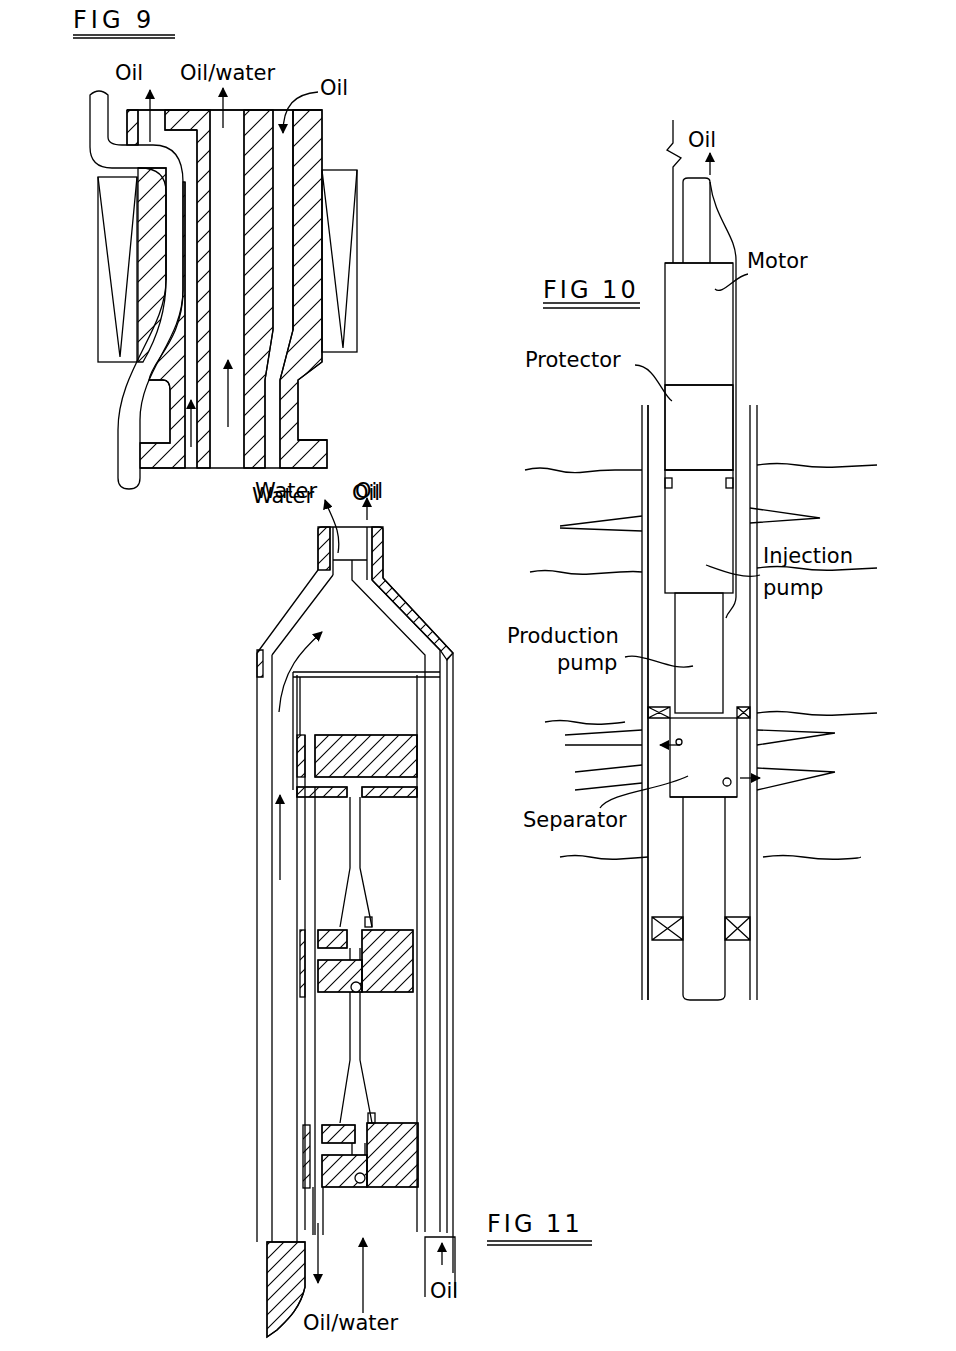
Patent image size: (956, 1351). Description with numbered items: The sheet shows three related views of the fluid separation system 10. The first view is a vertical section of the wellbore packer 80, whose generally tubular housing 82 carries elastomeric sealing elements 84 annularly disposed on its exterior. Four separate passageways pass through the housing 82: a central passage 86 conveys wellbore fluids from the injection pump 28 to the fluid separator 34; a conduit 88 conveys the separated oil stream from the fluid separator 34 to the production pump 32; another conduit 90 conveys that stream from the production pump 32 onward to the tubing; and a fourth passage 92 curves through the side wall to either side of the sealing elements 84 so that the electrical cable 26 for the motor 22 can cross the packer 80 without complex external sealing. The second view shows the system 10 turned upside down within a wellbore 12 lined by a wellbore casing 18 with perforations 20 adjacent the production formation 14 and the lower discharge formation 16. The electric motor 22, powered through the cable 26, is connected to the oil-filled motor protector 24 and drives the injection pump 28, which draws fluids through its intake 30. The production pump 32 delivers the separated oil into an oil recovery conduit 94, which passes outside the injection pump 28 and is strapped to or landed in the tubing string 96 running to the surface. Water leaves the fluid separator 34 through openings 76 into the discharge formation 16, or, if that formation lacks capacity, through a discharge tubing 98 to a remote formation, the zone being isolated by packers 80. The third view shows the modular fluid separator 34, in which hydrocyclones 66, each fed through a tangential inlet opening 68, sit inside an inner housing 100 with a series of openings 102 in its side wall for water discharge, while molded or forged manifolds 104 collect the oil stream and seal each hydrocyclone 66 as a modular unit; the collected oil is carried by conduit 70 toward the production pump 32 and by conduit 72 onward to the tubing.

In FIG. 10, the fluid separation system 10 is at (805, 396).
In FIG. 10, the wellbore 12 is at (652, 430).
In FIG. 10, the production formation 14 is at (701, 519).
In FIG. 10, the discharge formation 16 is at (711, 786).
In FIG. 10, the wellbore casing 18 is at (645, 613).
In FIG. 10, the perforations 20 is at (605, 526).
In FIG. 10, the electric motor 22 is at (665, 270).
In FIG. 10, the motor protector 24 is at (728, 413).
In FIG. 9, the cable 26 is at (90, 134).
In FIG. 10, the cable 26 is at (670, 186).
In FIG. 10, the injection pump 28 is at (699, 531).
In FIG. 10, the intake 30 is at (735, 466).
In FIG. 10, the production pump 32 is at (698, 653).
In FIG. 10, the fluid separator 34 is at (710, 757).
In FIG. 11, the hydrocyclone 66 is at (365, 893).
In FIG. 11, the tangential inlet opening 68 is at (376, 922).
In FIG. 11, the conduit 70 is at (315, 1037).
In FIG. 11, the conduit 72 is at (392, 613).
In FIG. 10, the openings 76 is at (765, 806).
In FIG. 9, the wellbore packer 80 is at (412, 152).
In FIG. 10, the wellbore packer 80 is at (745, 706).
In FIG. 9, the housing 82 is at (290, 408).
In FIG. 9, the sealing elements 84 is at (357, 262).
In FIG. 9, the central passage 86 is at (232, 440).
In FIG. 9, the conduit 88 is at (305, 158).
In FIG. 9, the conduit 90 is at (183, 472).
In FIG. 9, the passage 92 is at (152, 222).
In FIG. 10, the oil recovery conduit 94 is at (738, 328).
In FIG. 10, the tubing string 96 is at (690, 232).
In FIG. 10, the discharge tubing 98 is at (718, 876).
In FIG. 11, the inner housing 100 is at (430, 700).
In FIG. 11, the openings 102 is at (415, 782).
In FIG. 11, the manifolds 104 is at (405, 972).